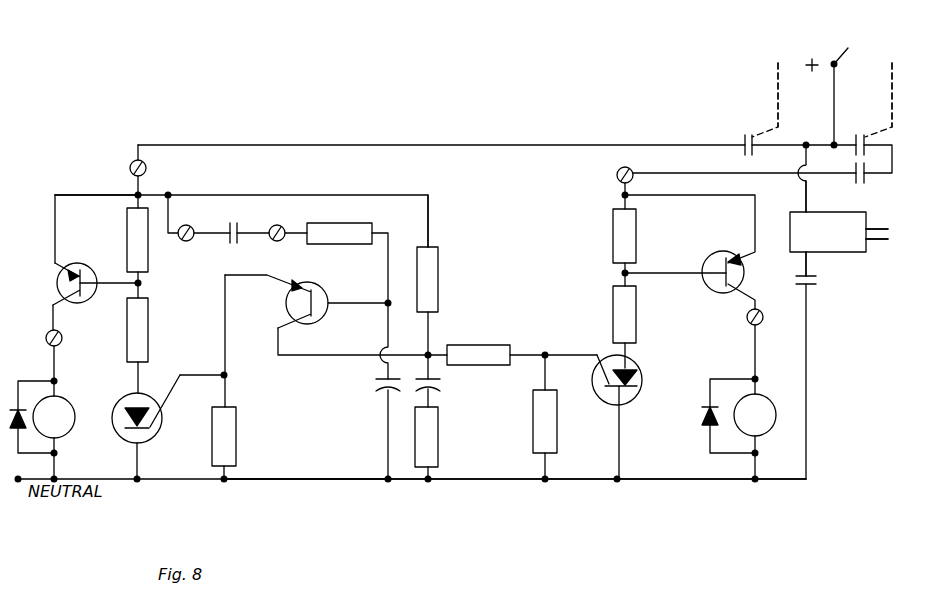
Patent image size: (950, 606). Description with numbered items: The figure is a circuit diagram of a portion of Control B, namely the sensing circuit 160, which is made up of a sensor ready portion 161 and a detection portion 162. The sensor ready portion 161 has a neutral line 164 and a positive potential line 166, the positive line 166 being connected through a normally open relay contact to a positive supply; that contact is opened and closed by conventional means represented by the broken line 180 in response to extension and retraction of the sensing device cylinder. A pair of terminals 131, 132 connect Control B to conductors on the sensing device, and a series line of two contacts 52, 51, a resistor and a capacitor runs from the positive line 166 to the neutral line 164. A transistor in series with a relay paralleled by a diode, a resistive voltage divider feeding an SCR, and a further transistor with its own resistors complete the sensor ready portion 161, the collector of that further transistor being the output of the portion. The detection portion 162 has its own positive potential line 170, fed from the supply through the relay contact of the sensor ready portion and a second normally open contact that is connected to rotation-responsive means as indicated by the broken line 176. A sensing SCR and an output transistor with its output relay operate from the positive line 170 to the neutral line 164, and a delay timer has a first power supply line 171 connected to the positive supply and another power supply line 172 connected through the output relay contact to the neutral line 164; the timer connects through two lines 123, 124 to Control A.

The sensing circuit 160 is at (78, 150).
The positive potential line 166 is at (78, 195).
The terminal 131 is at (196, 218).
The contact 52 is at (230, 226).
The contact 51 is at (238, 226).
The terminal 132 is at (283, 227).
The positive potential line 170 is at (702, 174).
The first power supply line 171 is at (806, 200).
The other power supply line 172 is at (801, 266).
The line 123 is at (886, 228).
The line 124 is at (886, 242).
The broken line 180 is at (778, 100).
The broken line 176 is at (892, 95).
The neutral line 164 is at (281, 481).
The sensor ready portion 161 is at (334, 492).
The detection portion 162 is at (544, 500).